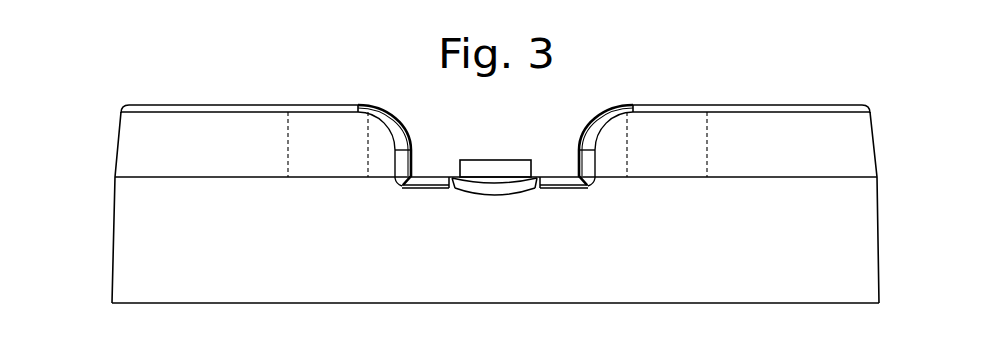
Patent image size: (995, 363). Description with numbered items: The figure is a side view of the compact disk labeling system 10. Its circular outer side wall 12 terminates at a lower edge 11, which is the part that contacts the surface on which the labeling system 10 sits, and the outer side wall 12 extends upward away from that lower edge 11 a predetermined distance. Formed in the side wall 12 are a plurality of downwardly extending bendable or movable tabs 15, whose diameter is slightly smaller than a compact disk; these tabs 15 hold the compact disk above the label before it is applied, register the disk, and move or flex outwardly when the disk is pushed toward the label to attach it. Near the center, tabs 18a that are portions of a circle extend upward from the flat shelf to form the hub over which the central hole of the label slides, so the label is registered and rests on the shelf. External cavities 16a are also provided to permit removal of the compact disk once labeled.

The compact disk labeling system 10 is at (140, 80).
The lower edge 11 is at (185, 302).
The circular outer side wall 12 is at (113, 197).
The tabs 15 is at (655, 145).
The external cavities 16a is at (492, 186).
The tabs 18a is at (483, 160).